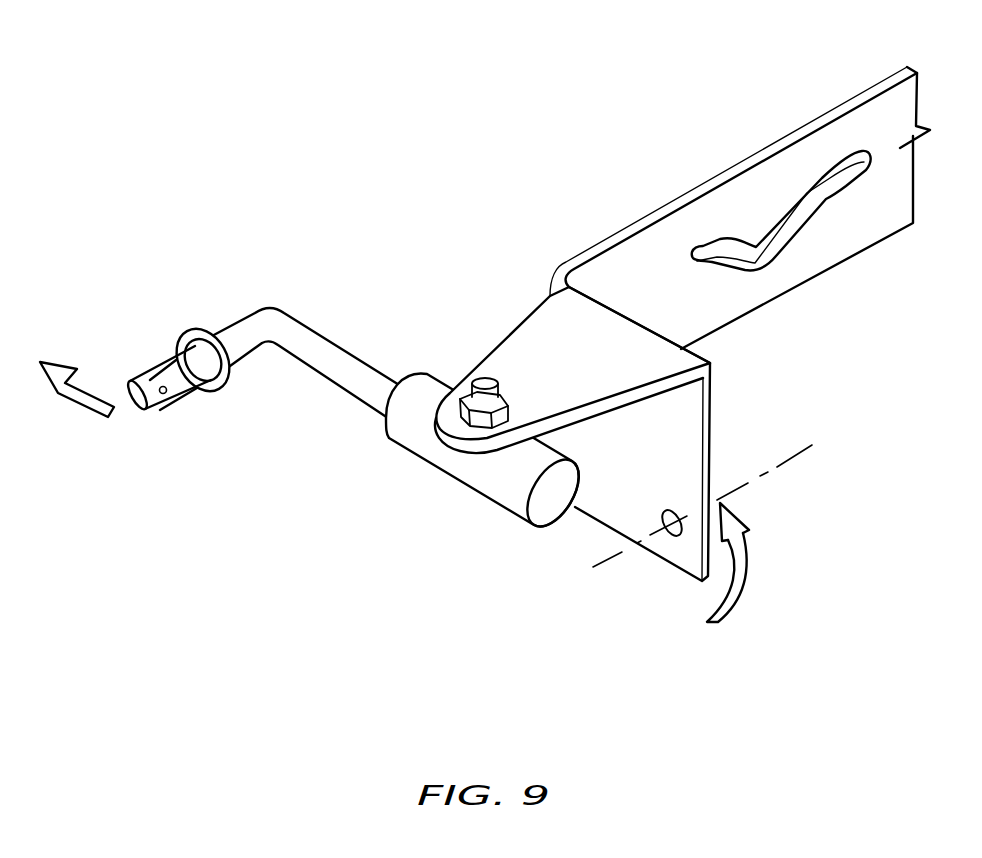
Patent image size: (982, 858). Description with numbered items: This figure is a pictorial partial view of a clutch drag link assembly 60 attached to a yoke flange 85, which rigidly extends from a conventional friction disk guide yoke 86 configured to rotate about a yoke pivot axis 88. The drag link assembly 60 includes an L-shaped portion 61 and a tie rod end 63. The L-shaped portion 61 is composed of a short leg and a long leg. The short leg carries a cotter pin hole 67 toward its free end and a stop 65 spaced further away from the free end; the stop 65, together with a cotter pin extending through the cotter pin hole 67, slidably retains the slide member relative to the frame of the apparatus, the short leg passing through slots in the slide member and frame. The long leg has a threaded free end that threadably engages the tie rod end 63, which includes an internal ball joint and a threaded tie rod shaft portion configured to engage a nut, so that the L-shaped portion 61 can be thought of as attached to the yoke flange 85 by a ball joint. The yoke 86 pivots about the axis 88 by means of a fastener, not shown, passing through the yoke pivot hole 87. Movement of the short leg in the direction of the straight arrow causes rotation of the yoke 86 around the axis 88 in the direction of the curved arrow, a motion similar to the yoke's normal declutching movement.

The clutch drag link assembly 60 is at (485, 382).
The L-shaped portion 61 is at (348, 380).
The tie rod end 63 is at (455, 468).
The stop 65 is at (192, 330).
The cotter pin hole 67 is at (167, 394).
The yoke flange 85 is at (529, 360).
The yoke 86 is at (727, 202).
The yoke pivot hole 87 is at (654, 523).
The yoke pivot axis 88 is at (617, 553).